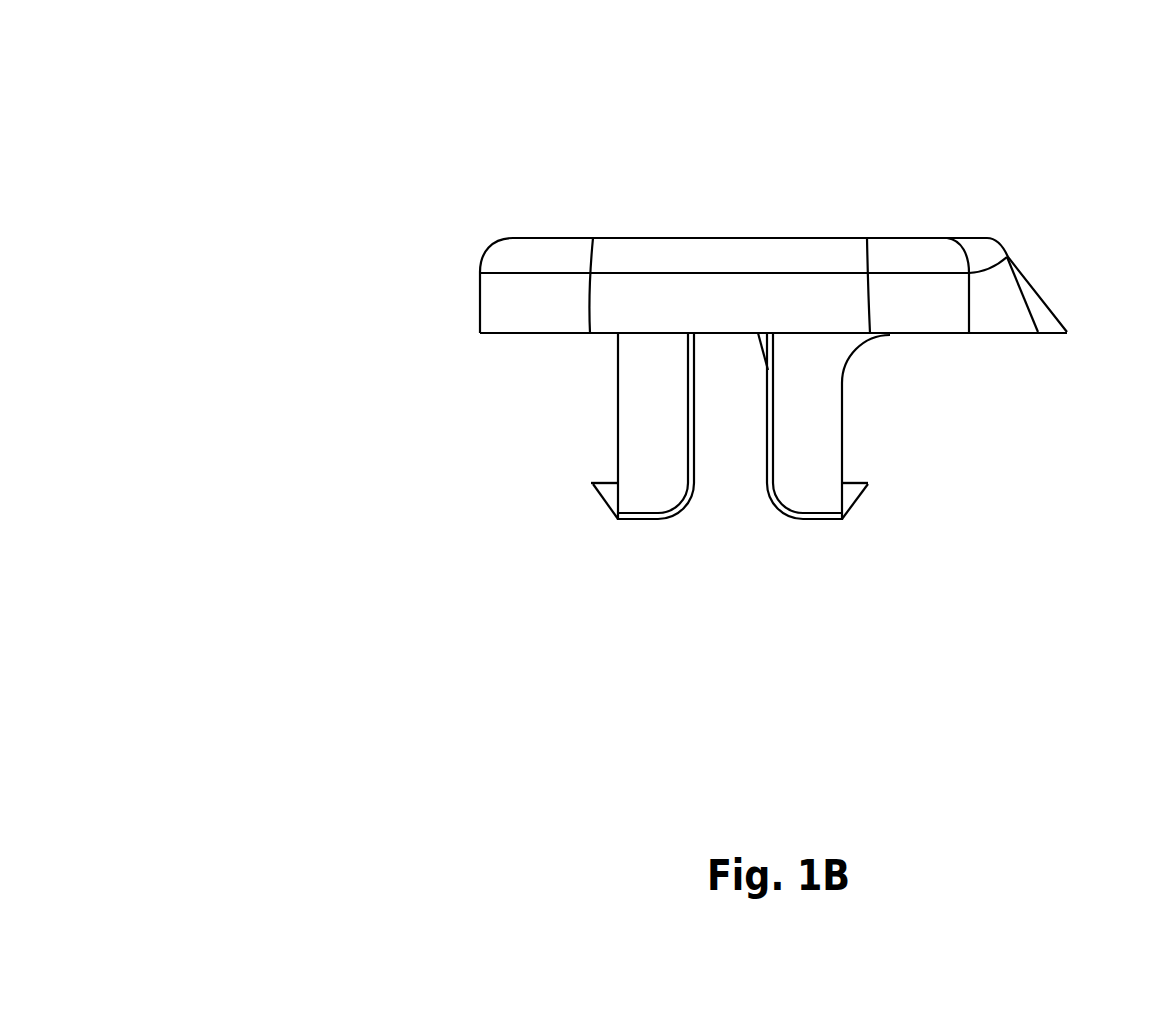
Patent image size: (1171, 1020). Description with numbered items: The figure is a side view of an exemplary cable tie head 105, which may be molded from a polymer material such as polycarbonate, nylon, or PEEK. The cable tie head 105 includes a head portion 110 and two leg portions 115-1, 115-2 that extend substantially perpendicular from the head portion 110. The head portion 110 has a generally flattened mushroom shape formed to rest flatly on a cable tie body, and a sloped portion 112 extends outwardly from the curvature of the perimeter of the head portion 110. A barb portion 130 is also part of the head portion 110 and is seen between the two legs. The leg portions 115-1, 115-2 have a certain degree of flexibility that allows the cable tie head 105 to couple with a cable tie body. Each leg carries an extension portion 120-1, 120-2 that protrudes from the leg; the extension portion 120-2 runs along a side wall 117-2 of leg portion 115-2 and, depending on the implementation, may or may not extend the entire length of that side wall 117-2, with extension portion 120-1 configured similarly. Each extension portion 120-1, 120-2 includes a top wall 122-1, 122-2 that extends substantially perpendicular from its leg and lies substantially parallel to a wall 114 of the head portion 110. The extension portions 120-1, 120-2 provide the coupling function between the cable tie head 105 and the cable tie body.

The cable tie head 105 is at (314, 72).
The head portion 110 is at (455, 238).
The sloped portion 112 is at (1035, 255).
The wall 114 is at (984, 342).
The leg portion 115-1 is at (647, 491).
The leg portion 115-2 is at (807, 491).
The side wall 117-2 is at (857, 393).
The extension portion 120-1 is at (577, 486).
The extension portion 120-2 is at (884, 487).
The top wall 122-1 is at (593, 469).
The top wall 122-2 is at (860, 469).
The barb portion 130 is at (744, 357).